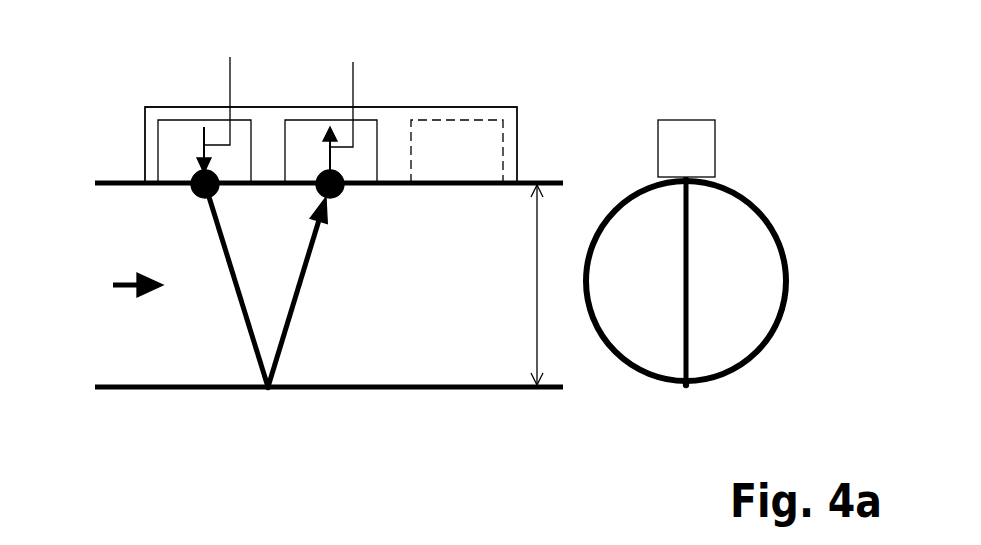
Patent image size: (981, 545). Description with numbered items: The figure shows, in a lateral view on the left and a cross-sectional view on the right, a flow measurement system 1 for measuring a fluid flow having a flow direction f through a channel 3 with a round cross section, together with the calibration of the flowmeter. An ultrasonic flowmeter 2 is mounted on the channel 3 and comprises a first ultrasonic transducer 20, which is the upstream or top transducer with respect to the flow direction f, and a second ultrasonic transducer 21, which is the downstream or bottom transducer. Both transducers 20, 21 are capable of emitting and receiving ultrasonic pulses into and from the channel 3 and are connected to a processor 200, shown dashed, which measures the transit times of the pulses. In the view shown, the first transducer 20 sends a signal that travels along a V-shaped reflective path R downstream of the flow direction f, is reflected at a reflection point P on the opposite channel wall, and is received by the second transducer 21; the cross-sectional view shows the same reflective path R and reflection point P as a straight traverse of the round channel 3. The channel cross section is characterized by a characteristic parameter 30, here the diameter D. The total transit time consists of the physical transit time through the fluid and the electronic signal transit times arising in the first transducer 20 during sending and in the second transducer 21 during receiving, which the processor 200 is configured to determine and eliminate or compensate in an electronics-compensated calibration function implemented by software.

The flow measurement system 1 is at (100, 97).
The ultrasonic flowmeter 2 is at (145, 152).
The channel 3 is at (140, 390).
The first ultrasonic transducer 20 is at (176, 118).
The second ultrasonic transducer 21 is at (300, 119).
The processor 200 is at (457, 118).
The characteristic parameter 30 is at (538, 287).
The reflection point P is at (263, 392).
The reflective path R is at (298, 303).
The flow direction f is at (117, 282).